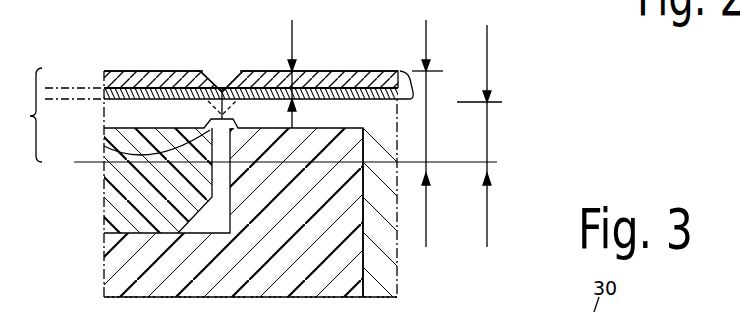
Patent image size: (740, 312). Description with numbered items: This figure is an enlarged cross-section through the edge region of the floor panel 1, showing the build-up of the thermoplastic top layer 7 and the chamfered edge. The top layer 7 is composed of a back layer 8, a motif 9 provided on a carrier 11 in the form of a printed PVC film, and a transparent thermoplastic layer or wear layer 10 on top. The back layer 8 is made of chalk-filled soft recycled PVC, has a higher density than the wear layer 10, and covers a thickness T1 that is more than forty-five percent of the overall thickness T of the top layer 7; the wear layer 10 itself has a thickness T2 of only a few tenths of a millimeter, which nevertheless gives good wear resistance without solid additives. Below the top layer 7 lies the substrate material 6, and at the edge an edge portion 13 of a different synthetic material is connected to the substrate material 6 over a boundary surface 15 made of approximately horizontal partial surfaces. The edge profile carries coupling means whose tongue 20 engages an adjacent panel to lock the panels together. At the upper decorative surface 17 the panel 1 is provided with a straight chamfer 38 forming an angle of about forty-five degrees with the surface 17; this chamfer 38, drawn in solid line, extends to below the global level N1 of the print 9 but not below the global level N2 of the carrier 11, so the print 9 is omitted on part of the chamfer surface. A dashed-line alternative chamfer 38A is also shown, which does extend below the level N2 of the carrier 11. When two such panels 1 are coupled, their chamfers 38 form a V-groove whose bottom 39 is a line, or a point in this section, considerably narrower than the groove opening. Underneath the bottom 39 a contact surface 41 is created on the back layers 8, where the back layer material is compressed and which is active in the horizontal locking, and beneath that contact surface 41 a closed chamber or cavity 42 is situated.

The floor panel 1 is at (158, 69).
The substrate material 6 is at (380, 272).
The thermoplastic top layer 7 is at (29, 116).
The back layer 8 is at (132, 71).
The motif 9 is at (364, 71).
The transparent thermoplastic layer or wear layer 10 is at (318, 71).
The carrier 11 is at (406, 71).
The edge portion 13 is at (128, 185).
The boundary surface 15 is at (365, 285).
The surface of the panel 17 is at (167, 71).
The tongue 20 is at (130, 274).
The chamfer 38 is at (211, 82).
The chamfer 38A is at (200, 71).
The bottom of the V-groove 39 is at (222, 112).
The contact surface 41 is at (108, 150).
The closed chamber or cavity 42 is at (165, 252).
The global level of the print N1 is at (86, 85).
The global level of the carrier N2 is at (86, 101).
The overall thickness of the top layer T is at (285, 132).
The thickness of the back layer T1 is at (490, 136).
The thickness of the wear layer T2 is at (304, 65).